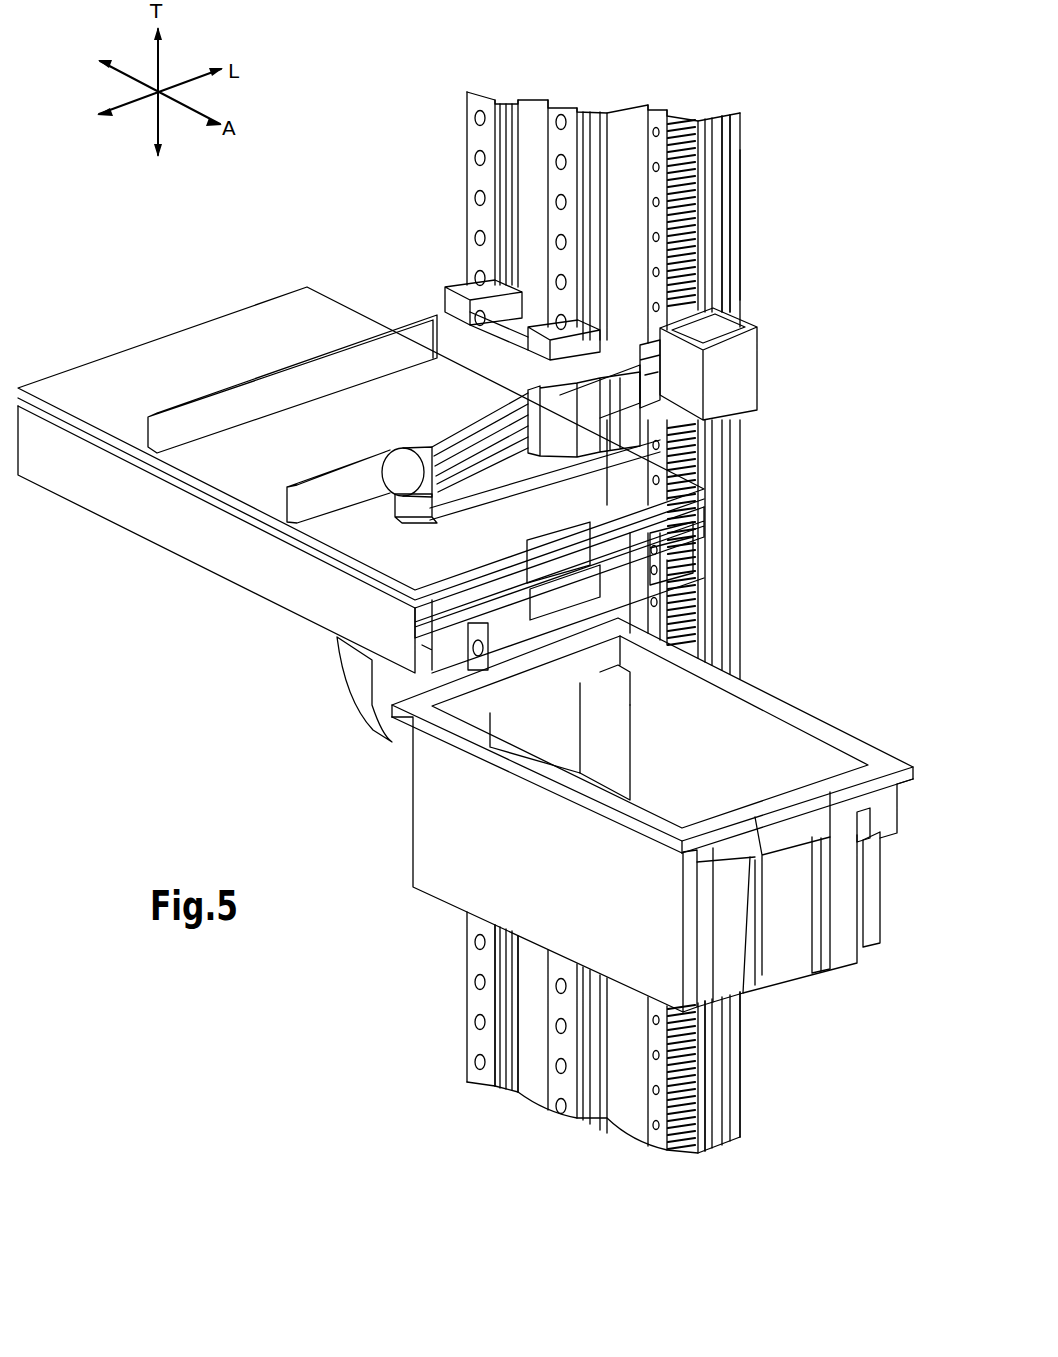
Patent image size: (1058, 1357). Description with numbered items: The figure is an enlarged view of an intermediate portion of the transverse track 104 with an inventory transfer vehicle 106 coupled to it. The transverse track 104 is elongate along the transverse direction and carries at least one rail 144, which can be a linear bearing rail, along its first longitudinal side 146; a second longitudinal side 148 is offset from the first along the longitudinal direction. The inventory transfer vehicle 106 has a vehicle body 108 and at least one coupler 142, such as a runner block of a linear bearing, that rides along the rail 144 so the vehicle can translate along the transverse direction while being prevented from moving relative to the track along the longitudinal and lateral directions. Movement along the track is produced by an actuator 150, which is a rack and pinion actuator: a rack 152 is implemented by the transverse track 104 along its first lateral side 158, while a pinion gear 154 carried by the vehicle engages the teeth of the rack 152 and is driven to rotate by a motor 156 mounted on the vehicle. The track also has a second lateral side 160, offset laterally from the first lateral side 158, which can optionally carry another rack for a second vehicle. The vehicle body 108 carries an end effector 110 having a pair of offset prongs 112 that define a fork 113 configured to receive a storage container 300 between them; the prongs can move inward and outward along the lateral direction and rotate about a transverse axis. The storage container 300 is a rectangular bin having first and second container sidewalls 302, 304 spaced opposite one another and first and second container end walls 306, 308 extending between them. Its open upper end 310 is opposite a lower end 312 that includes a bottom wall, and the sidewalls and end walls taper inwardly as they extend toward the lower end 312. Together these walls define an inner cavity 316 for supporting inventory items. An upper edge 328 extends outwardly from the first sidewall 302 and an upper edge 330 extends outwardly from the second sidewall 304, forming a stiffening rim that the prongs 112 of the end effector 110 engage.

The transverse track 104 is at (608, 143).
The inventory transfer vehicle 106 is at (205, 323).
The vehicle body 108 is at (75, 478).
The end effector 110 is at (336, 683).
The prongs 112 is at (440, 752).
The fork 113 is at (492, 790).
The coupler 142 is at (545, 328).
The rail 144 is at (560, 217).
The first longitudinal side 146 is at (528, 1028).
The second longitudinal side 148 is at (742, 1085).
The actuator 150 is at (764, 374).
The rack 152 is at (697, 278).
The pinion gear 154 is at (745, 320).
The motor 156 is at (462, 430).
The first lateral side 158 is at (653, 1103).
The second lateral side 160 is at (468, 985).
The storage container 300 is at (816, 675).
The first container sidewall 302 is at (880, 880).
The second container sidewall 304 is at (475, 868).
The first container end wall 306 is at (778, 937).
The second container end wall 308 is at (615, 705).
The upper end 310 is at (818, 725).
The lower end 312 is at (775, 990).
The inner cavity 316 is at (711, 744).
The upper edge 328 is at (913, 767).
The upper edge 330 is at (672, 858).